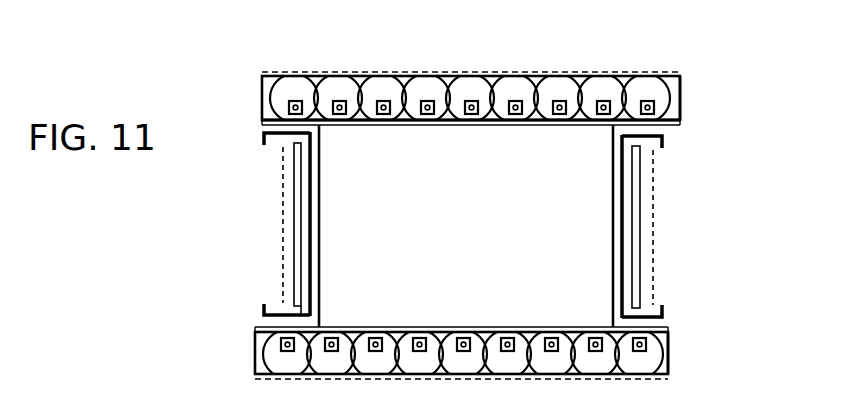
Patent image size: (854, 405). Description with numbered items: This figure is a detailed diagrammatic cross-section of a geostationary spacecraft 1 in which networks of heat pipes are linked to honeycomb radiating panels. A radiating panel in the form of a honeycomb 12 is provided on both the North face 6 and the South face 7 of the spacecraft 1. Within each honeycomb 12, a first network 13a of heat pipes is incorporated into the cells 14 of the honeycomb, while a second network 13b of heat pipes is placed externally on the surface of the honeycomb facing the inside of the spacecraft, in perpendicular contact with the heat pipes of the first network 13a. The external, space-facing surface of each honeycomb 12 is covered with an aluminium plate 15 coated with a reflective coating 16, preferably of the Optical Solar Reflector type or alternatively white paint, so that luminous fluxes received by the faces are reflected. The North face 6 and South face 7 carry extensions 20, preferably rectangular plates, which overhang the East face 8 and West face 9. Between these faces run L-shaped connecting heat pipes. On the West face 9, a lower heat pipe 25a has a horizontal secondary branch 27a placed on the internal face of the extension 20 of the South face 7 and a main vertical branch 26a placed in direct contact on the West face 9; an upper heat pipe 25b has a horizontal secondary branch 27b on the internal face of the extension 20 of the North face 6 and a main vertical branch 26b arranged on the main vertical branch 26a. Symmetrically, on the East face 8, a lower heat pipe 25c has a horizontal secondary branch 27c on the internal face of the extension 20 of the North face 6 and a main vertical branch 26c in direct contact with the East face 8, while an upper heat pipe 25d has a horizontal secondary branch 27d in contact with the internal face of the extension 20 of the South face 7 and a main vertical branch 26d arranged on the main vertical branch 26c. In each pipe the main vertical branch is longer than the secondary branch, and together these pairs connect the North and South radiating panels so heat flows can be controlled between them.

The spacecraft 1 is at (664, 40).
The North face 6 is at (433, 125).
The South face 7 is at (452, 330).
The East face 8 is at (612, 262).
The West face 9 is at (321, 212).
The honeycomb radiating panel 12 is at (680, 84).
The first network of heat pipes 13a is at (427, 92).
The second network of heat pipes 13b is at (262, 118).
The cells 14 is at (362, 77).
The aluminium plate 15 is at (494, 77).
The reflective coating 16 is at (561, 71).
The extension 20 is at (676, 124).
The lower connecting heat pipe 25a is at (313, 310).
The upper connecting heat pipe 25b is at (283, 150).
The lower connecting heat pipe 25c is at (663, 145).
The upper connecting heat pipe 25d is at (654, 219).
The main vertical branch 26a is at (311, 160).
The main vertical branch 26b is at (296, 234).
The main vertical branch 26c is at (624, 180).
The main vertical branch 26d is at (641, 252).
The horizontal secondary branch 27a is at (268, 313).
The horizontal secondary branch 27b is at (264, 140).
The horizontal secondary branch 27c is at (622, 138).
The horizontal secondary branch 27d is at (666, 316).